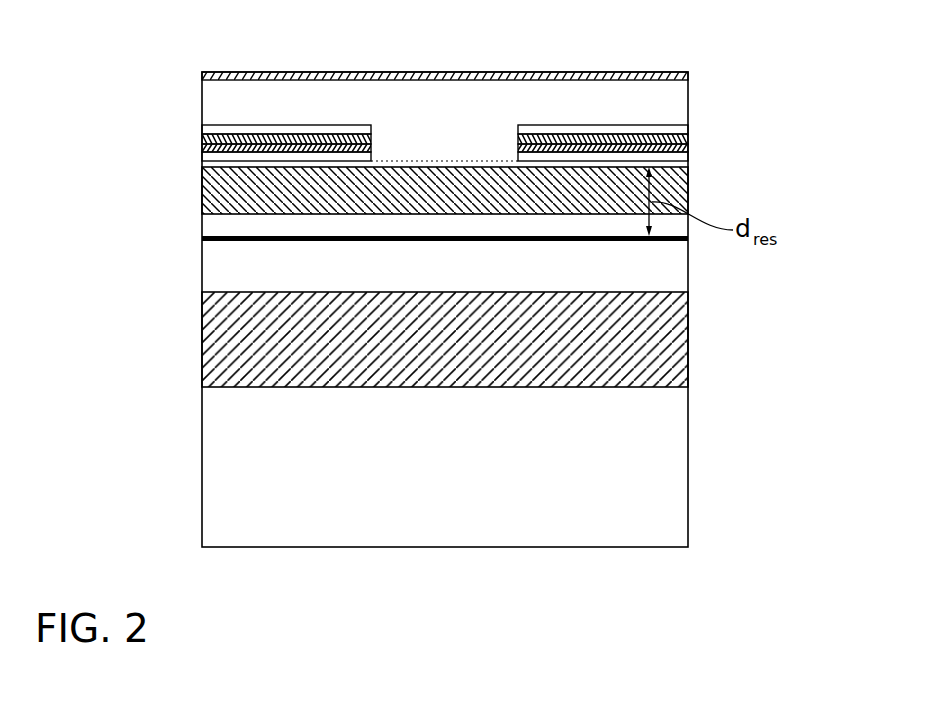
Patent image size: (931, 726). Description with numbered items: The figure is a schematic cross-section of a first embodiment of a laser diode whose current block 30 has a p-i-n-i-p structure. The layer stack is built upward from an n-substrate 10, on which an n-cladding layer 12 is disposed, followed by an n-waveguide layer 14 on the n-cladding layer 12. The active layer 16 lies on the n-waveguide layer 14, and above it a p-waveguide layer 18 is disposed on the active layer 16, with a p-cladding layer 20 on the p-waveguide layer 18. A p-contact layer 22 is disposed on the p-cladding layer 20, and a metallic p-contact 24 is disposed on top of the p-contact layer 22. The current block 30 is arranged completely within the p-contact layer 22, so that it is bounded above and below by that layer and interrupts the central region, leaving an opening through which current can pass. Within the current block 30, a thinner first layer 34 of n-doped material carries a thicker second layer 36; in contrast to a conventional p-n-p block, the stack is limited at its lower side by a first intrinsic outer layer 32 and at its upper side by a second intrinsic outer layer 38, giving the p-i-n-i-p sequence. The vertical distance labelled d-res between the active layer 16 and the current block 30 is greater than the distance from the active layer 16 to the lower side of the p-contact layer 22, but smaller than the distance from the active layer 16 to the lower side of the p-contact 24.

The n-substrate 10 is at (668, 492).
The n-cladding layer 12 is at (650, 345).
The n-waveguide layer 14 is at (670, 280).
The active layer 16 is at (202, 238).
The p-waveguide layer 18 is at (211, 223).
The p-cladding layer 20 is at (237, 205).
The p-contact layer 22 is at (247, 113).
The metallic p-contact 24 is at (205, 76).
The current block 30 is at (519, 143).
The first intrinsic outer layer 32 is at (489, 176).
The first layer 34 is at (672, 150).
The second layer 36 is at (672, 139).
The second intrinsic outer layer 38 is at (672, 130).